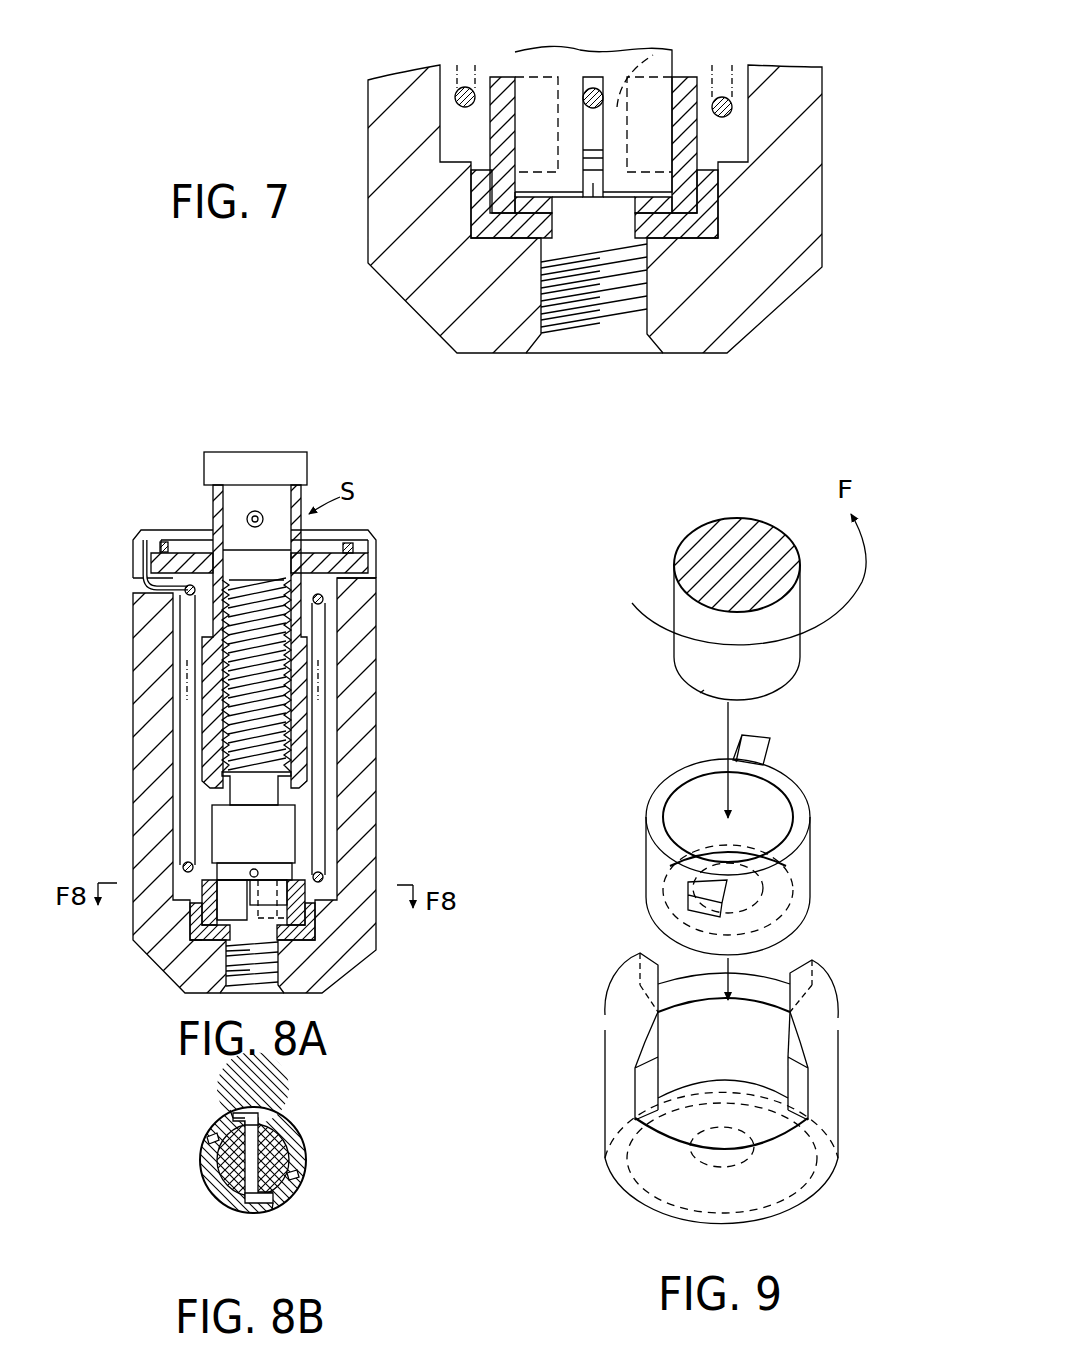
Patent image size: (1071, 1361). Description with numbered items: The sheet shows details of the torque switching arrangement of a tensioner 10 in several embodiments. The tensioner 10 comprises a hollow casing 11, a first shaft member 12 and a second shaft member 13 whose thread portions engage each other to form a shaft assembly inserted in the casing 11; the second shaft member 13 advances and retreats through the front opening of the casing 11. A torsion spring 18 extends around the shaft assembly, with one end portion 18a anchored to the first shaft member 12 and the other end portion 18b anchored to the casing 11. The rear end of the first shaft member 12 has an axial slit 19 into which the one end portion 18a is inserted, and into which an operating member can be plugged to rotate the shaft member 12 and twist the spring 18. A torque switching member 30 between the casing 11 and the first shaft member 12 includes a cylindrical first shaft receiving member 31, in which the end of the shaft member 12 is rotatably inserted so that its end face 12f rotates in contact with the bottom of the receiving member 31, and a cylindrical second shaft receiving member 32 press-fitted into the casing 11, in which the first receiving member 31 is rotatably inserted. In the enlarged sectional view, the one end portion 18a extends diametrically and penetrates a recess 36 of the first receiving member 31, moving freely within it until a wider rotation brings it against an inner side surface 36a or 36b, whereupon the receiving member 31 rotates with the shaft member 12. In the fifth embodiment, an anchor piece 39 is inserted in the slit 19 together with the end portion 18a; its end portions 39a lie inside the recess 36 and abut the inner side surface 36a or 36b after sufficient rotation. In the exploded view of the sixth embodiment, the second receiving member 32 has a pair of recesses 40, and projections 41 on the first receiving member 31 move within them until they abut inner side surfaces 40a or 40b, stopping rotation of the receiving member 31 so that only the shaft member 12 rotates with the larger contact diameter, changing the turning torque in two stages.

In FIG. 8A, the tensioner 10 is at (398, 570).
In FIG. 7, the hollow casing 11 is at (808, 137).
In FIG. 8A, the hollow casing 11 is at (363, 797).
In FIG. 7, the first shaft member 12 is at (547, 55).
In FIG. 8A, the first shaft member 12 is at (223, 740).
In FIG. 8B, the first shaft member 12 is at (293, 1190).
In FIG. 9, the first shaft member 12 is at (772, 667).
In FIG. 7, the end face of the first shaft member 12f is at (545, 243).
In FIG. 8A, the end face of the first shaft member 12f is at (192, 960).
In FIG. 9, the end face of the first shaft member 12f is at (700, 693).
In FIG. 8A, the second shaft member 13 is at (307, 650).
In FIG. 7, the torsion spring 18 is at (730, 92).
In FIG. 8A, the torsion spring 18 is at (318, 707).
In FIG. 7, the one end portion of the torsion spring 18a is at (595, 92).
In FIG. 8A, the one end portion of the torsion spring 18a is at (254, 869).
In FIG. 8A, the other end portion of the torsion spring 18b is at (150, 538).
In FIG. 7, the slit 19 is at (595, 183).
In FIG. 8A, the slit 19 is at (202, 903).
In FIG. 8B, the slit 19 is at (220, 1187).
In FIG. 9, the torque switching member 30 is at (858, 829).
In FIG. 7, the first shaft receiving member 31 is at (688, 85).
In FIG. 8A, the first shaft receiving member 31 is at (210, 913).
In FIG. 8B, the first shaft receiving member 31 is at (228, 1190).
In FIG. 9, the first shaft receiving member 31 is at (790, 900).
In FIG. 7, the second shaft receiving member 32 is at (718, 200).
In FIG. 8A, the second shaft receiving member 32 is at (295, 930).
In FIG. 9, the second shaft receiving member 32 is at (822, 1140).
In FIG. 7, the recess 36 is at (653, 52).
In FIG. 8B, the recess 36 is at (222, 1120).
In FIG. 8B, the inner side surface of the recess 36a is at (255, 1110).
In FIG. 8B, the inner side surface of the recess 36b is at (208, 1140).
In FIG. 8A, the anchor piece 39 is at (275, 895).
In FIG. 8B, the anchor piece 39 is at (258, 1150).
In FIG. 8B, the end portion of the anchor piece 39a is at (238, 1115).
In FIG. 9, the recess 40 is at (753, 983).
In FIG. 9, the inner side surface of the recess 40a is at (783, 997).
In FIG. 9, the inner side surface of the recess 40b is at (660, 998).
In FIG. 9, the projection 41 is at (770, 750).